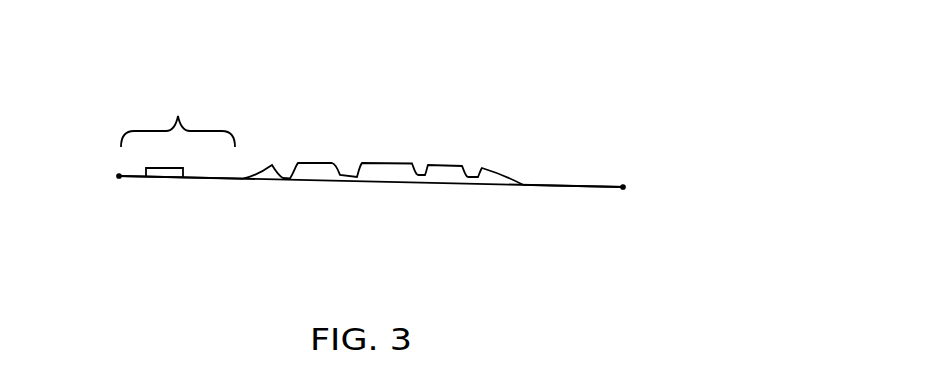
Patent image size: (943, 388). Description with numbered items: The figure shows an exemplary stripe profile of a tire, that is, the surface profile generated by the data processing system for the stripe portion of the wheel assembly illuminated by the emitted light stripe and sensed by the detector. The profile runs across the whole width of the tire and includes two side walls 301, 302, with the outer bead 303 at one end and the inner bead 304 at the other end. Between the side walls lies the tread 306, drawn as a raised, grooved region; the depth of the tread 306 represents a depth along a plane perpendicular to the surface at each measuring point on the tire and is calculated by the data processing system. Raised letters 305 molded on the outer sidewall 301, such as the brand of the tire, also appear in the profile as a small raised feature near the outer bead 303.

The sidewall 301 is at (173, 102).
The sidewall 302 is at (571, 179).
The outer bead 303 is at (111, 211).
The inner bead 304 is at (670, 221).
The raised letters 305 is at (175, 168).
The tread 306 is at (373, 129).